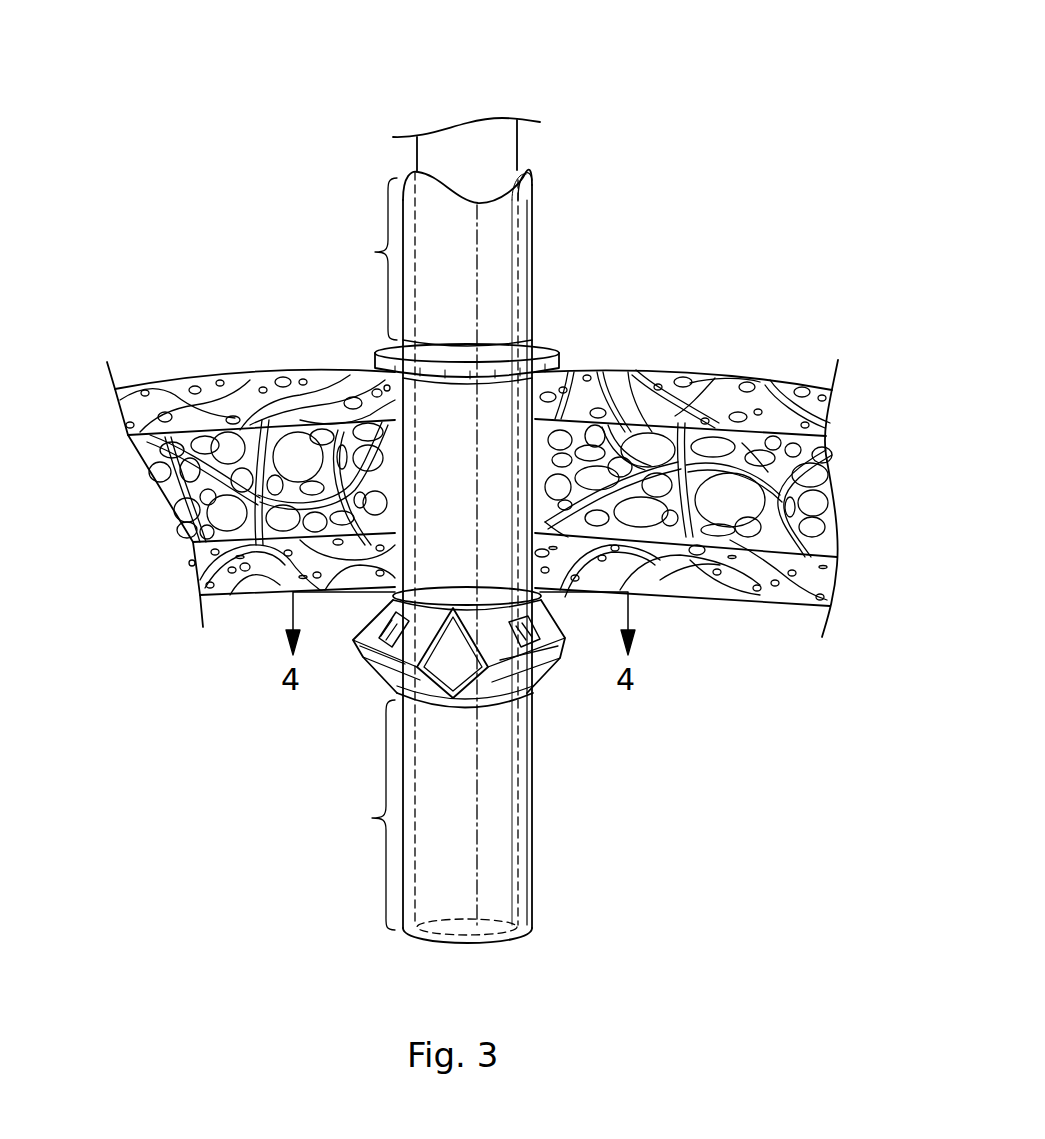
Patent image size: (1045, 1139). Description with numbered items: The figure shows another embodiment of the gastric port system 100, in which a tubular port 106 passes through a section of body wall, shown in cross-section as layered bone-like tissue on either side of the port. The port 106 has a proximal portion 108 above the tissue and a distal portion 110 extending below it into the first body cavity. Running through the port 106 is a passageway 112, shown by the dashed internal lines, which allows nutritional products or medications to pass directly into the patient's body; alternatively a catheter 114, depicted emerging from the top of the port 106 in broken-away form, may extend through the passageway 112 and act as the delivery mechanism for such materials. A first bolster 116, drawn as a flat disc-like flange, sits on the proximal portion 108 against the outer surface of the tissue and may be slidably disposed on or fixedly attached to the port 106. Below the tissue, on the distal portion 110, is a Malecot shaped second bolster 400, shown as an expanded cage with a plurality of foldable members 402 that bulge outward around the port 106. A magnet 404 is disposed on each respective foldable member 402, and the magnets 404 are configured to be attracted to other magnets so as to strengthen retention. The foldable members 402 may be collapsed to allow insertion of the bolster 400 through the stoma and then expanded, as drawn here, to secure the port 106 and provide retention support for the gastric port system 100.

The gastric port system 100 is at (331, 88).
The port 106 is at (505, 235).
The proximal portion 108 is at (375, 248).
The distal portion 110 is at (372, 822).
The passageway 112 is at (522, 167).
The catheter 114 is at (473, 145).
The first bolster 116 is at (552, 350).
The Malecot shaped second bolster 400 is at (522, 687).
The foldable members 402 is at (388, 670).
The magnet 404 is at (382, 630).